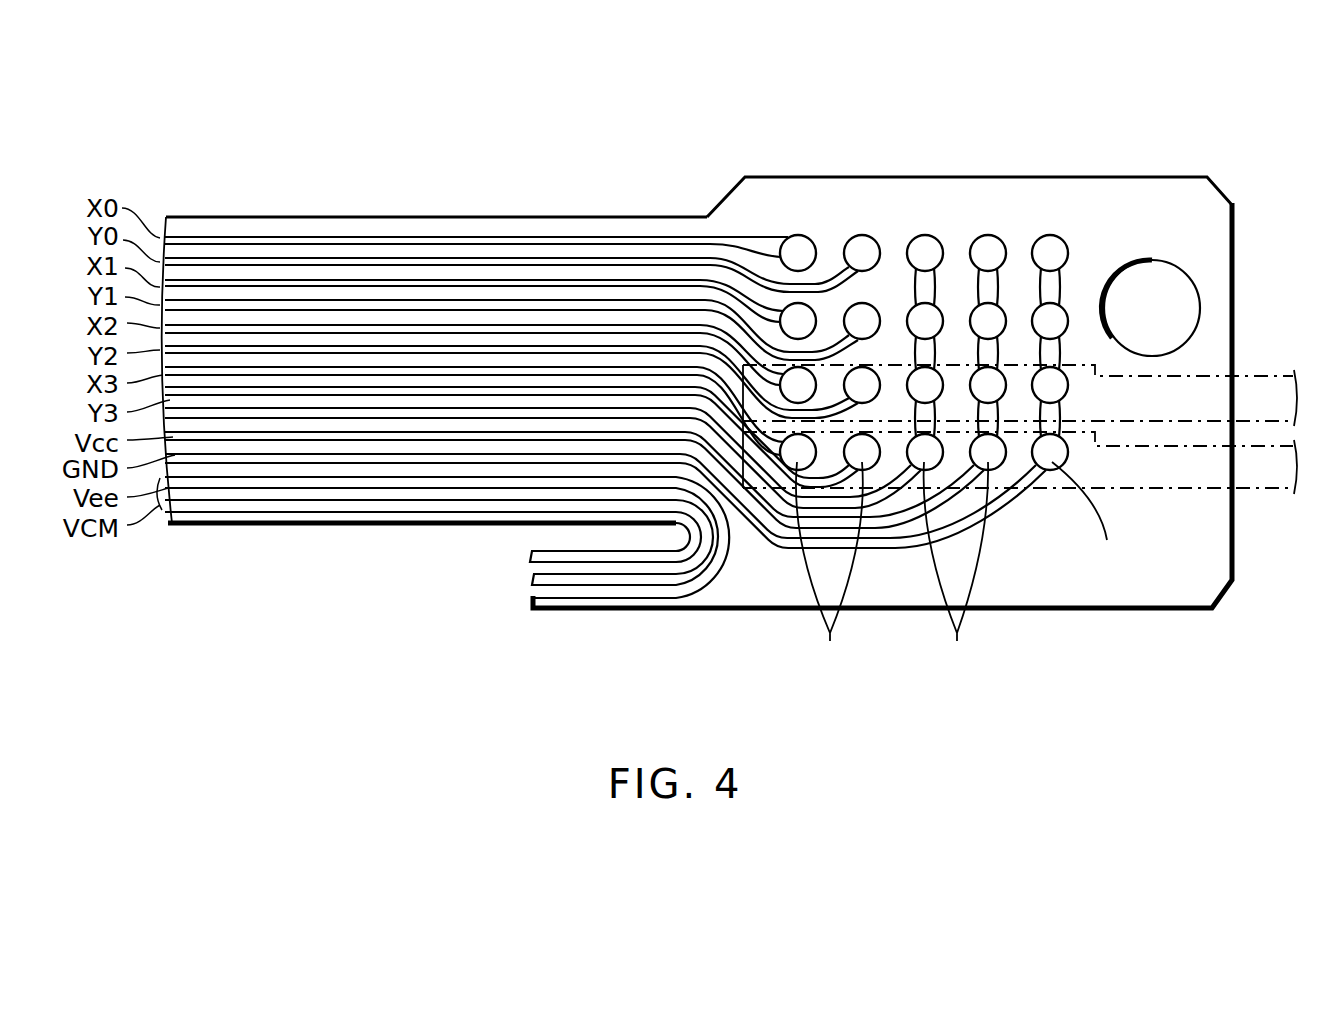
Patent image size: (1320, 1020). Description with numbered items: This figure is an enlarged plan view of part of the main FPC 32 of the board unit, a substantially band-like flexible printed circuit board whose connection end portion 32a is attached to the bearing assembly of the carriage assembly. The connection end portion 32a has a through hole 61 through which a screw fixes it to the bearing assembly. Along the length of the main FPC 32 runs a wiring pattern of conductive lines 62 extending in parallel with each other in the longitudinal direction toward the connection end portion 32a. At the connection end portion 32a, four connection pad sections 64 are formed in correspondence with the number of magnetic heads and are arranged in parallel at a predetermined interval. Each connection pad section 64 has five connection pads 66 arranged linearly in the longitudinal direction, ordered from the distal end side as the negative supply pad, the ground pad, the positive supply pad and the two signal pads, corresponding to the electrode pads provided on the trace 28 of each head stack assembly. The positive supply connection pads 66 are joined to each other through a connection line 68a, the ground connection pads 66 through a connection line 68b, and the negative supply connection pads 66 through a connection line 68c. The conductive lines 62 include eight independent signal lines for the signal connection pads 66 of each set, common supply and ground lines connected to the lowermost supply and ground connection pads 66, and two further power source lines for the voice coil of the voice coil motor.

The trace 28 is at (1262, 382).
The main flexible printed circuit board 32 is at (443, 210).
The connection end portion 32a is at (1162, 158).
The through hole 61 is at (1192, 291).
The conductive lines 62 is at (357, 280).
The connection pad section 64 is at (1018, 200).
The connection pads 66 is at (957, 568).
The connection line 68a is at (908, 276).
The connection line 68b is at (968, 278).
The connection line 68c is at (1067, 282).